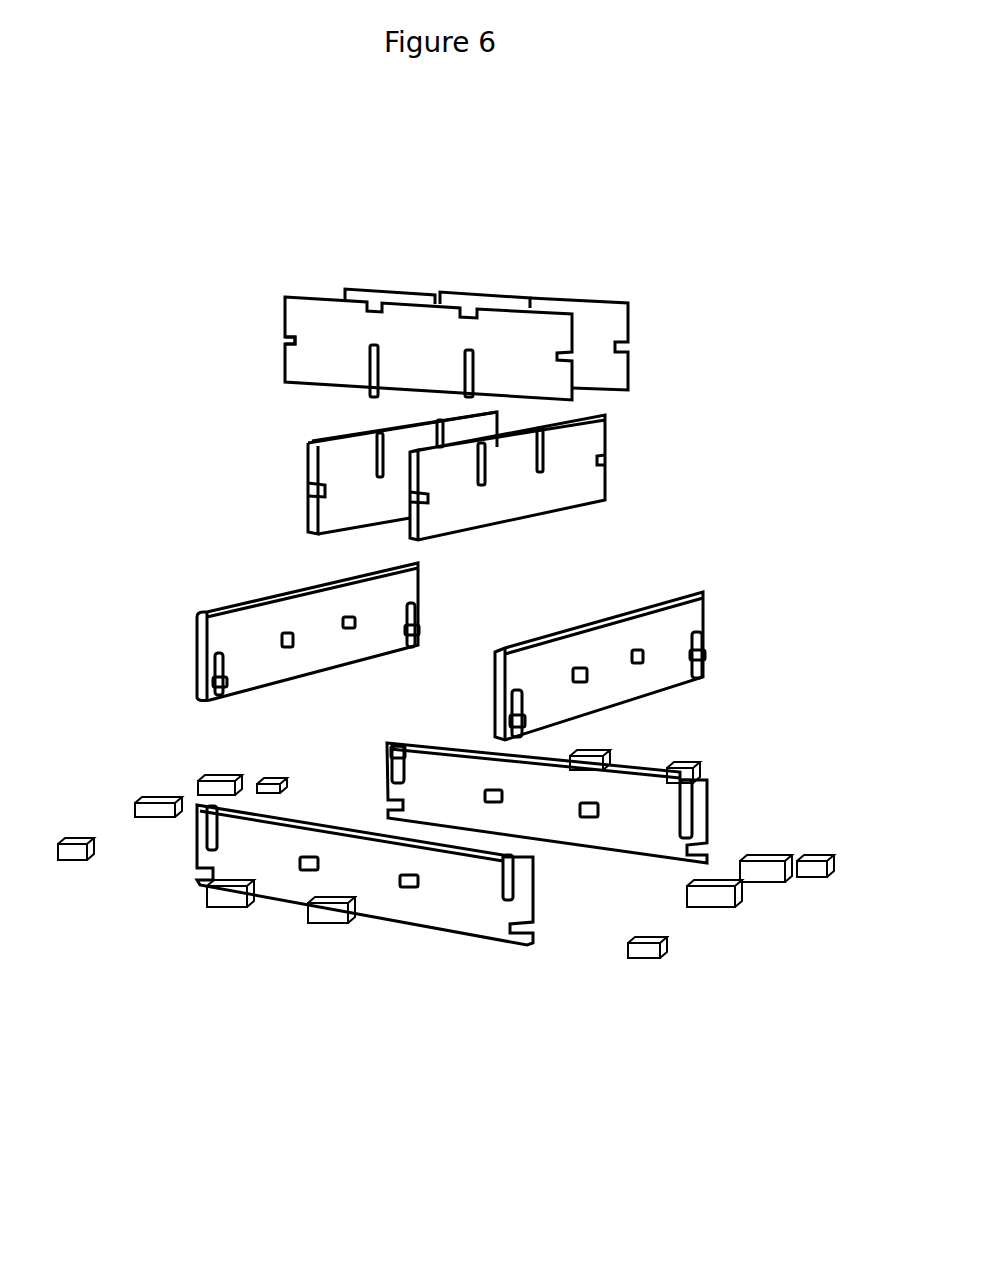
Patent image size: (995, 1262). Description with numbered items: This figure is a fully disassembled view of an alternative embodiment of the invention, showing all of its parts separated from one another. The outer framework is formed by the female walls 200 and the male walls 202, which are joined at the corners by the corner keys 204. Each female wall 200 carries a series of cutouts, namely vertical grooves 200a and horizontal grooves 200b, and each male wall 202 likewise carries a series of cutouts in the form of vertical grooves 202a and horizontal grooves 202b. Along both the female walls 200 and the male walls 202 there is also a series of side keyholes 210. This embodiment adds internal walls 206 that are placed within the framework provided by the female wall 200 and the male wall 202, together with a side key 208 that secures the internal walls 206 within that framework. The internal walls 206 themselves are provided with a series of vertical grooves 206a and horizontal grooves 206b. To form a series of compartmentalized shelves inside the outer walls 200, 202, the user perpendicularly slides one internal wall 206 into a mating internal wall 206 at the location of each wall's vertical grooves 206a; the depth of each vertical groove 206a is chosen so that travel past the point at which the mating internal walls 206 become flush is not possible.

The female walls 200 is at (305, 630).
The vertical grooves 200a is at (412, 618).
The horizontal grooves 200b is at (696, 650).
The male walls 202 is at (551, 769).
The vertical grooves 202a is at (401, 770).
The horizontal grooves 202b is at (476, 960).
The corner keys 204 is at (658, 950).
The internal walls 206 is at (441, 406).
The vertical grooves 206a is at (372, 372).
The horizontal grooves 206b is at (284, 338).
The side key 208 is at (146, 800).
The side keyholes 210 is at (410, 884).